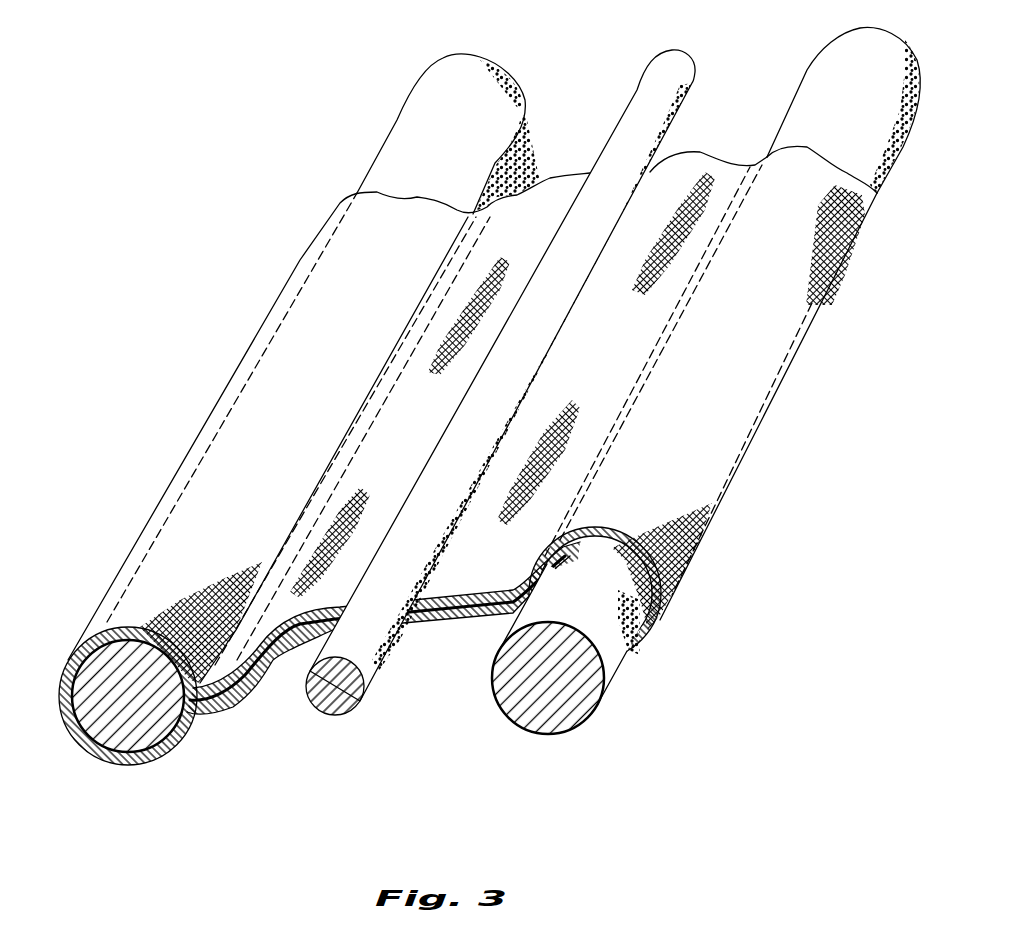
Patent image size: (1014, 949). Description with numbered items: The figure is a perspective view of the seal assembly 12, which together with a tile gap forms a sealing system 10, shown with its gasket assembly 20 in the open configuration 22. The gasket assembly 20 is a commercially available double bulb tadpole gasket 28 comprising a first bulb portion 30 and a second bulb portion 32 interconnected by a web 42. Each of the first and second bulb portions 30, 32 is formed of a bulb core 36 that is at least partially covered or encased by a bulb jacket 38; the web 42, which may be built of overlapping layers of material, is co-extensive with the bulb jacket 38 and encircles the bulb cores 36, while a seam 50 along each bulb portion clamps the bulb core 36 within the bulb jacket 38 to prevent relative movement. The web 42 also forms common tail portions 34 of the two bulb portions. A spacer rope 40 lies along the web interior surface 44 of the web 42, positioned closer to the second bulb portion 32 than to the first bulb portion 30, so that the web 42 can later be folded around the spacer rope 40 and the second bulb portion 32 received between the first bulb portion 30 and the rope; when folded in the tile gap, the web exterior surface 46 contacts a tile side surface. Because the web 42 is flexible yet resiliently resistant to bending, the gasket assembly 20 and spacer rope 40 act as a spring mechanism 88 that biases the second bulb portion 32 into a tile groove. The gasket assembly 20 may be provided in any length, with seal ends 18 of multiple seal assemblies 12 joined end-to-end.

The sealing system 10 is at (179, 106).
The seal assembly 12 is at (227, 140).
The seal ends 18 is at (76, 741).
The gasket assembly 20 is at (449, 439).
The open configuration 22 is at (449, 439).
The double bulb tadpole gasket 28 is at (449, 439).
The spring mechanism 88 is at (449, 439).
The first bulb portion 30 is at (690, 475).
The second bulb portion 32 is at (118, 600).
The common tail portions 34 is at (500, 415).
The web 42 is at (500, 415).
The bulb core 36 is at (117, 753).
The bulb jacket 38 is at (93, 653).
The spacer rope 40 is at (327, 707).
The web interior surface 44 is at (383, 628).
The web exterior surface 46 is at (457, 603).
The seam 50 is at (385, 387).